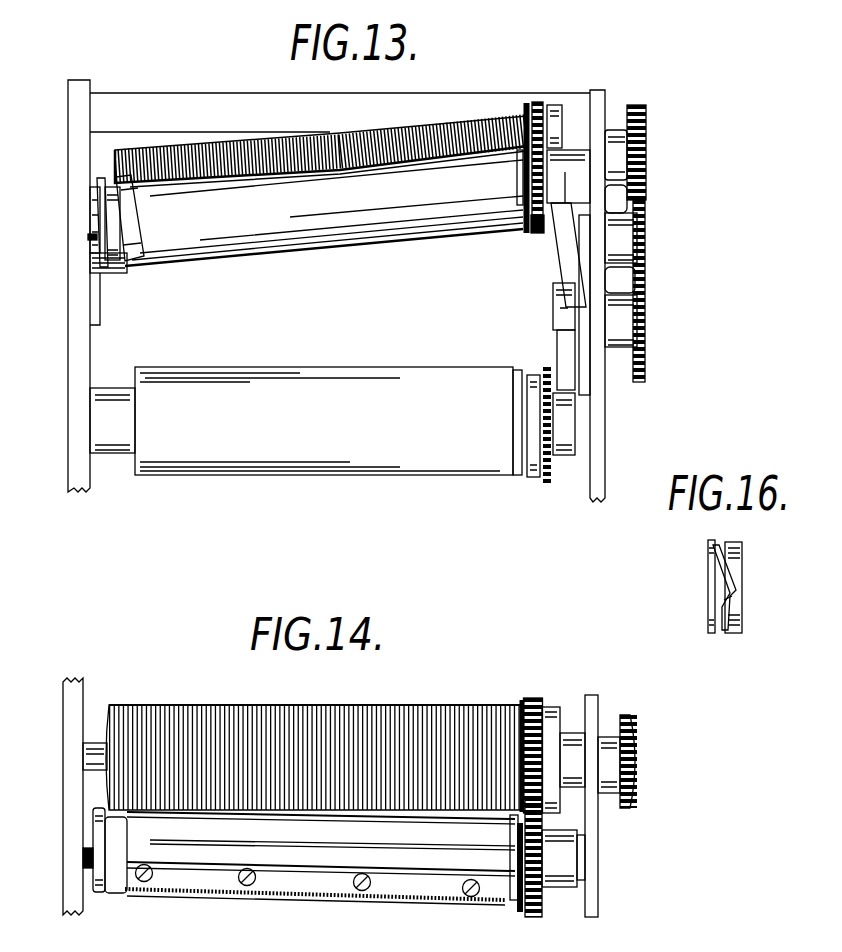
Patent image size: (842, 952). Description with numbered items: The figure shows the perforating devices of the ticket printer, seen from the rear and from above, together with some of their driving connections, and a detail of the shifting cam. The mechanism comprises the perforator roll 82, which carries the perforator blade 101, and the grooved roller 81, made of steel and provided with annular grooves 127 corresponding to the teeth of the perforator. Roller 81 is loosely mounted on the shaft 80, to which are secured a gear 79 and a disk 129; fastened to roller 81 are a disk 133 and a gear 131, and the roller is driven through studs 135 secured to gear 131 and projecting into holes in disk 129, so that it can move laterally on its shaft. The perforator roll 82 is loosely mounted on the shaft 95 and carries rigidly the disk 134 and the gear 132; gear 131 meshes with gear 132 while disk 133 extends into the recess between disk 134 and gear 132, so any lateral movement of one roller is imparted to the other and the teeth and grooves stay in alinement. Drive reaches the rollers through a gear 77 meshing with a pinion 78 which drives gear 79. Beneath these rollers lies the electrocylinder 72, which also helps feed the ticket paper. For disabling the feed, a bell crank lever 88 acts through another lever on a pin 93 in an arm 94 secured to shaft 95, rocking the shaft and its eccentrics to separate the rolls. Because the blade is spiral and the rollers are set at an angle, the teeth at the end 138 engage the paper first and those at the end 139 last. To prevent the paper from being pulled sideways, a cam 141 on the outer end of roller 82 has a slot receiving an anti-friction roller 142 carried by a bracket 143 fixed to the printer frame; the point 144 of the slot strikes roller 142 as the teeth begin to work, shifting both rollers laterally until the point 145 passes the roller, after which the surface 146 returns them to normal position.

In FIG. 13, the electrocylinder 72 is at (219, 445).
In FIG. 13, the gear 77 is at (645, 368).
In FIG. 13, the pinion 78 is at (644, 242).
In FIG. 13, the gear 79 is at (640, 120).
In FIG. 14, the gear 79 is at (633, 735).
In FIG. 13, the shaft 80 is at (94, 188).
In FIG. 14, the shaft 80 is at (95, 742).
In FIG. 13, the roller 81 is at (473, 115).
In FIG. 14, the roller 81 is at (388, 705).
In FIG. 13, the perforator roll 82 is at (203, 256).
In FIG. 14, the perforator roll 82 is at (190, 897).
In FIG. 13, the bell crank lever 88 is at (578, 277).
In FIG. 13, the pin 93 is at (586, 234).
In FIG. 13, the arm 94 is at (560, 240).
In FIG. 13, the shaft 95 is at (95, 238).
In FIG. 14, the shaft 95 is at (84, 876).
In FIG. 13, the perforator blade 101 is at (179, 187).
In FIG. 14, the perforator blade 101 is at (446, 890).
In FIG. 13, the annular grooves 127 is at (372, 128).
In FIG. 14, the annular grooves 127 is at (218, 705).
In FIG. 13, the disk 129 is at (552, 105).
In FIG. 14, the disk 129 is at (558, 727).
In FIG. 13, the gear 131 is at (540, 102).
In FIG. 14, the gear 131 is at (535, 699).
In FIG. 14, the gear 132 is at (534, 908).
In FIG. 13, the disk 133 is at (527, 103).
In FIG. 14, the disk 133 is at (528, 699).
In FIG. 13, the disk 134 is at (531, 228).
In FIG. 14, the disk 134 is at (521, 917).
In FIG. 14, the studs 135 is at (587, 698).
In FIG. 13, the end 138 is at (143, 258).
In FIG. 14, the end 138 is at (152, 894).
In FIG. 13, the end 139 is at (520, 180).
In FIG. 14, the end 139 is at (500, 898).
In FIG. 13, the cam 141 is at (100, 180).
In FIG. 14, the cam 141 is at (93, 822).
In FIG. 16, the cam 141 is at (738, 565).
In FIG. 13, the anti-friction roller 142 is at (112, 273).
In FIG. 13, the bracket 143 is at (100, 326).
In FIG. 16, the point 144 is at (712, 545).
In FIG. 16, the point 145 is at (726, 583).
In FIG. 16, the surface 146 is at (735, 592).